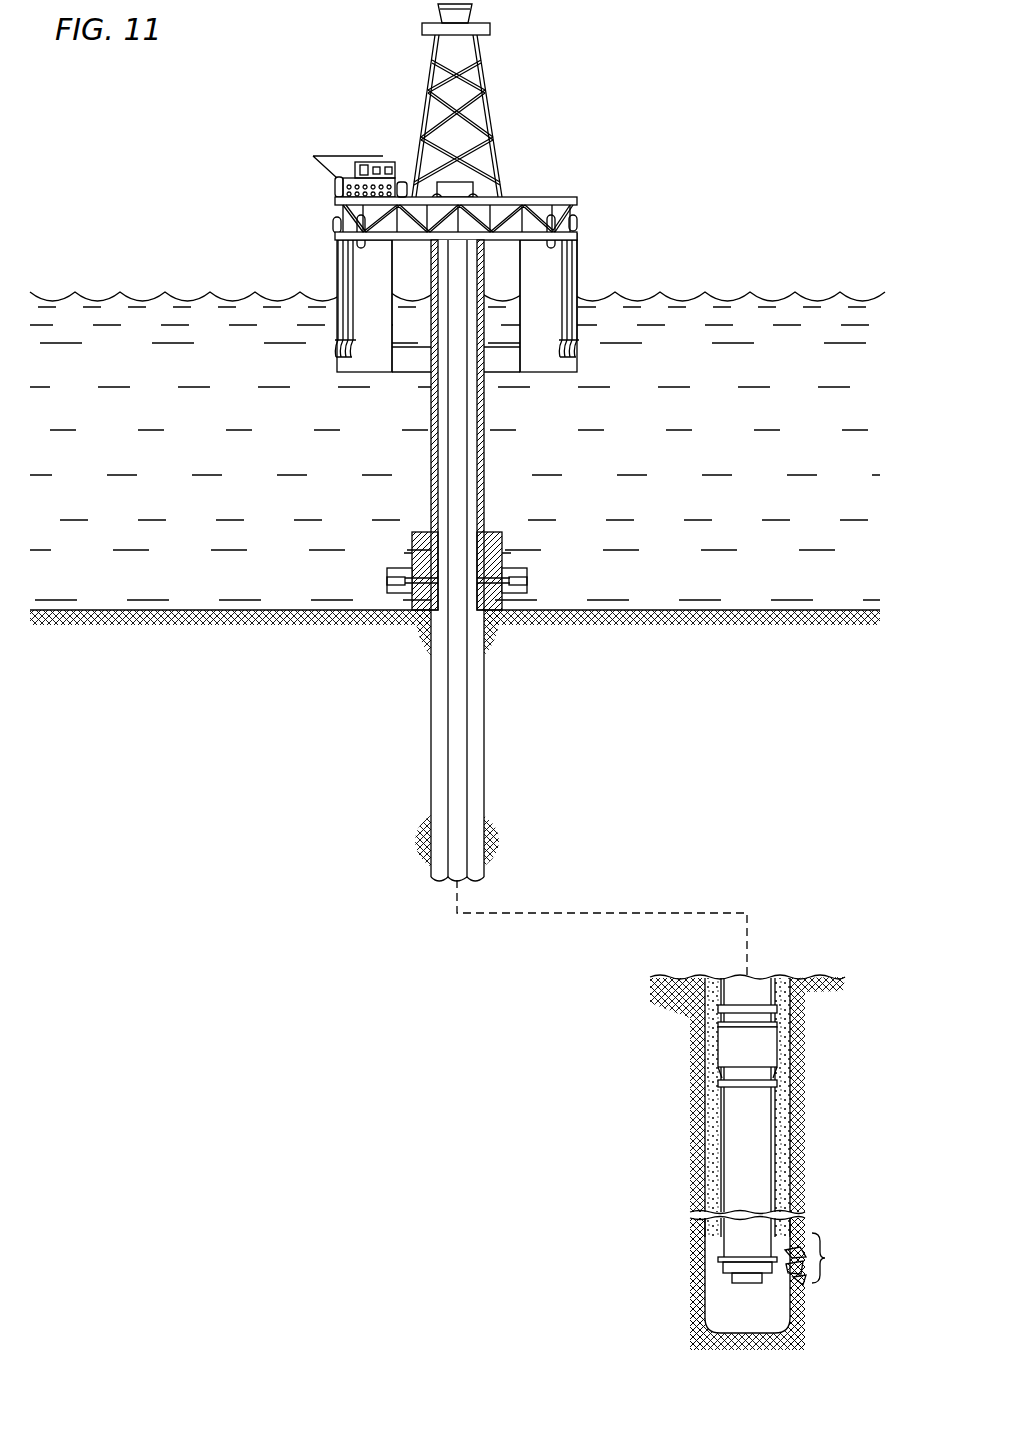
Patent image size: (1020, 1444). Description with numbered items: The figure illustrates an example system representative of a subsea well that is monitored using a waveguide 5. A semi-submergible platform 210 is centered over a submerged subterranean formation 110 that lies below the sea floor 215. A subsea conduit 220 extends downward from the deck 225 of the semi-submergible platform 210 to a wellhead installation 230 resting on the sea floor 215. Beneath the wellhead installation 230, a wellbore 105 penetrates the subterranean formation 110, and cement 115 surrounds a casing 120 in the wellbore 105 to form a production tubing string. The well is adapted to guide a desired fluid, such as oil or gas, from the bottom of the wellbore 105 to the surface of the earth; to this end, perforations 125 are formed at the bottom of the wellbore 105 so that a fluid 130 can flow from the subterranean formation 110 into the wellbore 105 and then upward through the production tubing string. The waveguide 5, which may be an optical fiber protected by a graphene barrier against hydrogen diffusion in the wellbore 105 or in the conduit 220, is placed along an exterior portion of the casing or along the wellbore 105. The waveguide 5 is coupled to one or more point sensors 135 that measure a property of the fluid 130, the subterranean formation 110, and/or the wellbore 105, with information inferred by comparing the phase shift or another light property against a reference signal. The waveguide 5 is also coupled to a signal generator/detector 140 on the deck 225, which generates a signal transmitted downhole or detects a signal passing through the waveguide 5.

The waveguide 5 is at (780, 1131).
The wellbore 105 is at (692, 1152).
The subterranean formation 110 is at (680, 1002).
The cement 115 is at (785, 1086).
The casing 120 is at (787, 1050).
The perforations 125 is at (826, 1258).
The fluid 130 is at (755, 1303).
The point sensors 135 is at (797, 1193).
The signal generator/detector 140 is at (402, 181).
The semi-submergible platform 210 is at (580, 180).
The sea floor 215 is at (698, 605).
The subsea conduit 220 is at (487, 418).
The deck 225 is at (582, 237).
The wellhead installation 230 is at (498, 532).